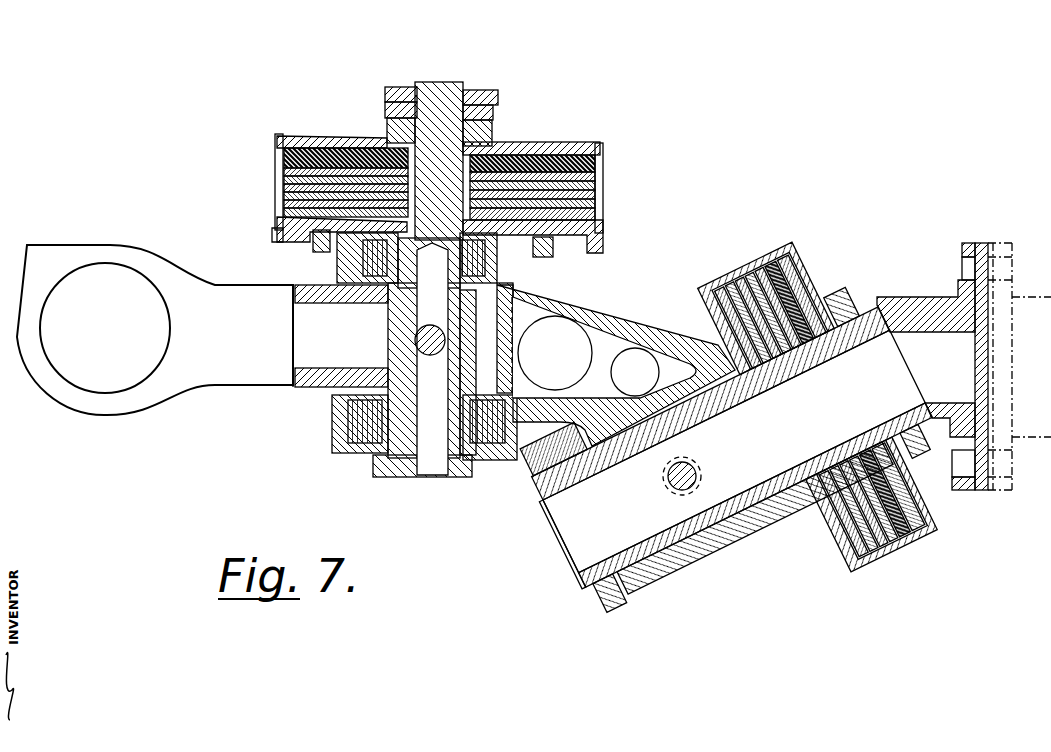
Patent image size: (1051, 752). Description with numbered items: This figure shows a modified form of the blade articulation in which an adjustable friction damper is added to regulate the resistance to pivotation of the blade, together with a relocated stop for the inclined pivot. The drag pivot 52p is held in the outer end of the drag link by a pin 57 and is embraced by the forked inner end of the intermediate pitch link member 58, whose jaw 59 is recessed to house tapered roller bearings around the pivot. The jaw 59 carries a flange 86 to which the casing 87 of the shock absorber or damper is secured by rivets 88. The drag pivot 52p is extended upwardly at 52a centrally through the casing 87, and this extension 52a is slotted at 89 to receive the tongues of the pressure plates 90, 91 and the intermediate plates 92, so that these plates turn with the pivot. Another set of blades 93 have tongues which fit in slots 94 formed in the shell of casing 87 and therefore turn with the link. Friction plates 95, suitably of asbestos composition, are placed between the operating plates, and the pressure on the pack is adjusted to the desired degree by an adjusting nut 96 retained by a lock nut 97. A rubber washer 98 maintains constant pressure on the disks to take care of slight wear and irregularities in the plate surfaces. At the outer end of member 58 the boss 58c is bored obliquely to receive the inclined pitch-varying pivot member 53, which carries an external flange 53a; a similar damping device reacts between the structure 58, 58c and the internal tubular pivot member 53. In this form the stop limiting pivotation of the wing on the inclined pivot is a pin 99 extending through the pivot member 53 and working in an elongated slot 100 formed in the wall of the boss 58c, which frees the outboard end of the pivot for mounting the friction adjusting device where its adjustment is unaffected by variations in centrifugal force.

The extension of drag pivot 52a is at (437, 82).
The drag pivot 52p is at (390, 322).
The inclined pitch-varying pivot 53 is at (888, 430).
The external flange 53a is at (822, 543).
The pin 57 is at (431, 355).
The pitch link member 58 is at (620, 315).
The boss 58c is at (733, 550).
The jaw 59 is at (347, 263).
The flange 86 is at (312, 245).
The casing 87 is at (600, 247).
The rivets 88 is at (532, 258).
The slot 89 is at (392, 140).
The pressure plate 90 is at (308, 136).
The pressure plate 91 is at (310, 223).
The intermediate plates 92 is at (280, 187).
The blades 93 is at (598, 215).
The slots 94 is at (600, 157).
The friction plates 95 is at (280, 200).
The adjusting nut 96 is at (500, 110).
The lock nut 97 is at (485, 92).
The rubber washer 98 is at (278, 152).
The stop pin 99 is at (697, 473).
The elongated slot 100 is at (687, 453).